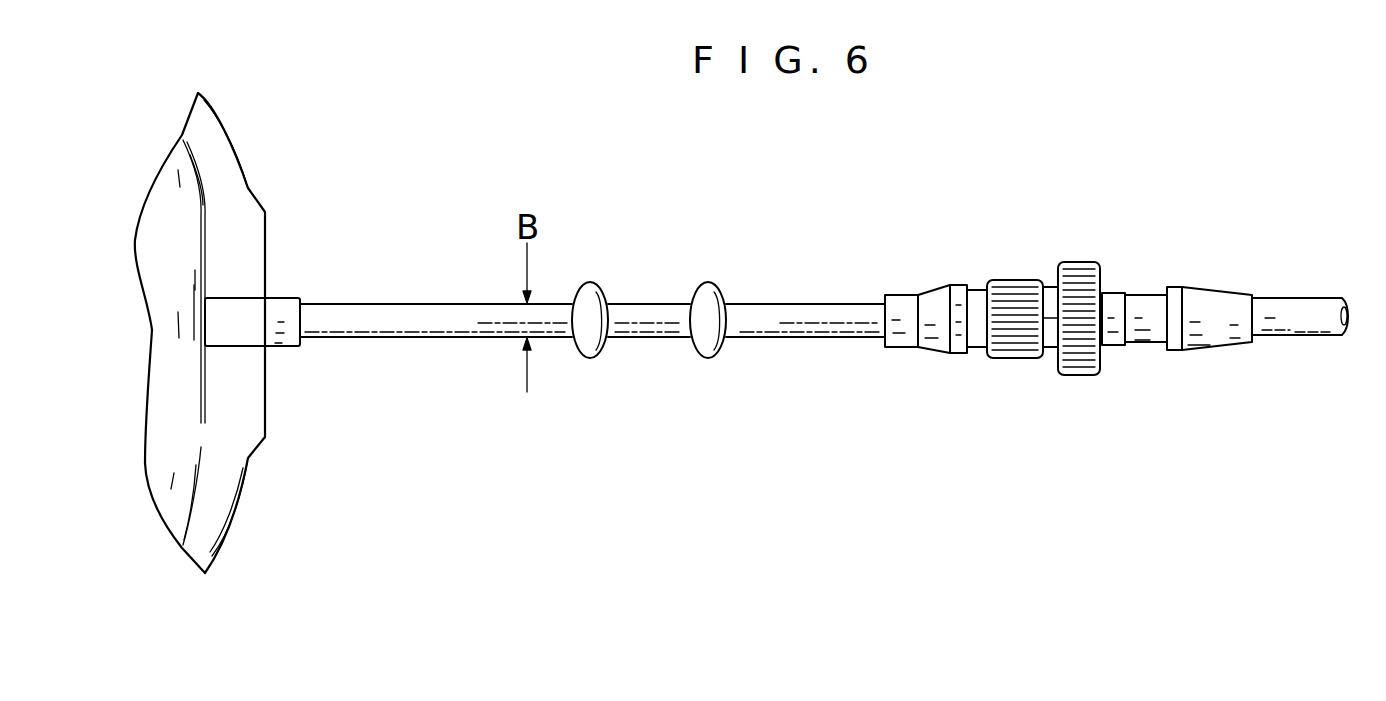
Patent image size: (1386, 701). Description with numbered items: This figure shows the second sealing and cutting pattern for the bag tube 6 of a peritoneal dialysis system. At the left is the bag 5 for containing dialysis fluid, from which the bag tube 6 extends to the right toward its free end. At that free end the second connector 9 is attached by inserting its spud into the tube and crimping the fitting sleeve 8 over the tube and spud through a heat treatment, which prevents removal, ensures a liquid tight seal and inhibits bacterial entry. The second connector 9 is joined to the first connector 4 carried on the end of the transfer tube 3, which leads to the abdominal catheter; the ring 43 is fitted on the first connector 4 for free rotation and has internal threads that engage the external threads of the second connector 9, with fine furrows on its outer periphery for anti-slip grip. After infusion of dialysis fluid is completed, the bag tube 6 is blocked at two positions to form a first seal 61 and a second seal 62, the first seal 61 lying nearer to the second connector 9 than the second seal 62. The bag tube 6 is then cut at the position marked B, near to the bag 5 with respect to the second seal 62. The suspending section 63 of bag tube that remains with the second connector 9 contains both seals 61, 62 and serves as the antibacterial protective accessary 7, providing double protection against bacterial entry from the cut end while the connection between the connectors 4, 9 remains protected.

The transfer tube 3 is at (1307, 313).
The first connector 4 is at (1118, 284).
The bag 5 is at (266, 212).
The bag tube 6 is at (406, 315).
The antibacterial protective accessary 7 is at (1068, 423).
The fitting sleeve 8 is at (918, 307).
The second connector 9 is at (1017, 281).
The ring 43 is at (1077, 280).
The first seal 61 is at (708, 290).
The second seal 62 is at (592, 302).
The suspending section 63 is at (822, 313).